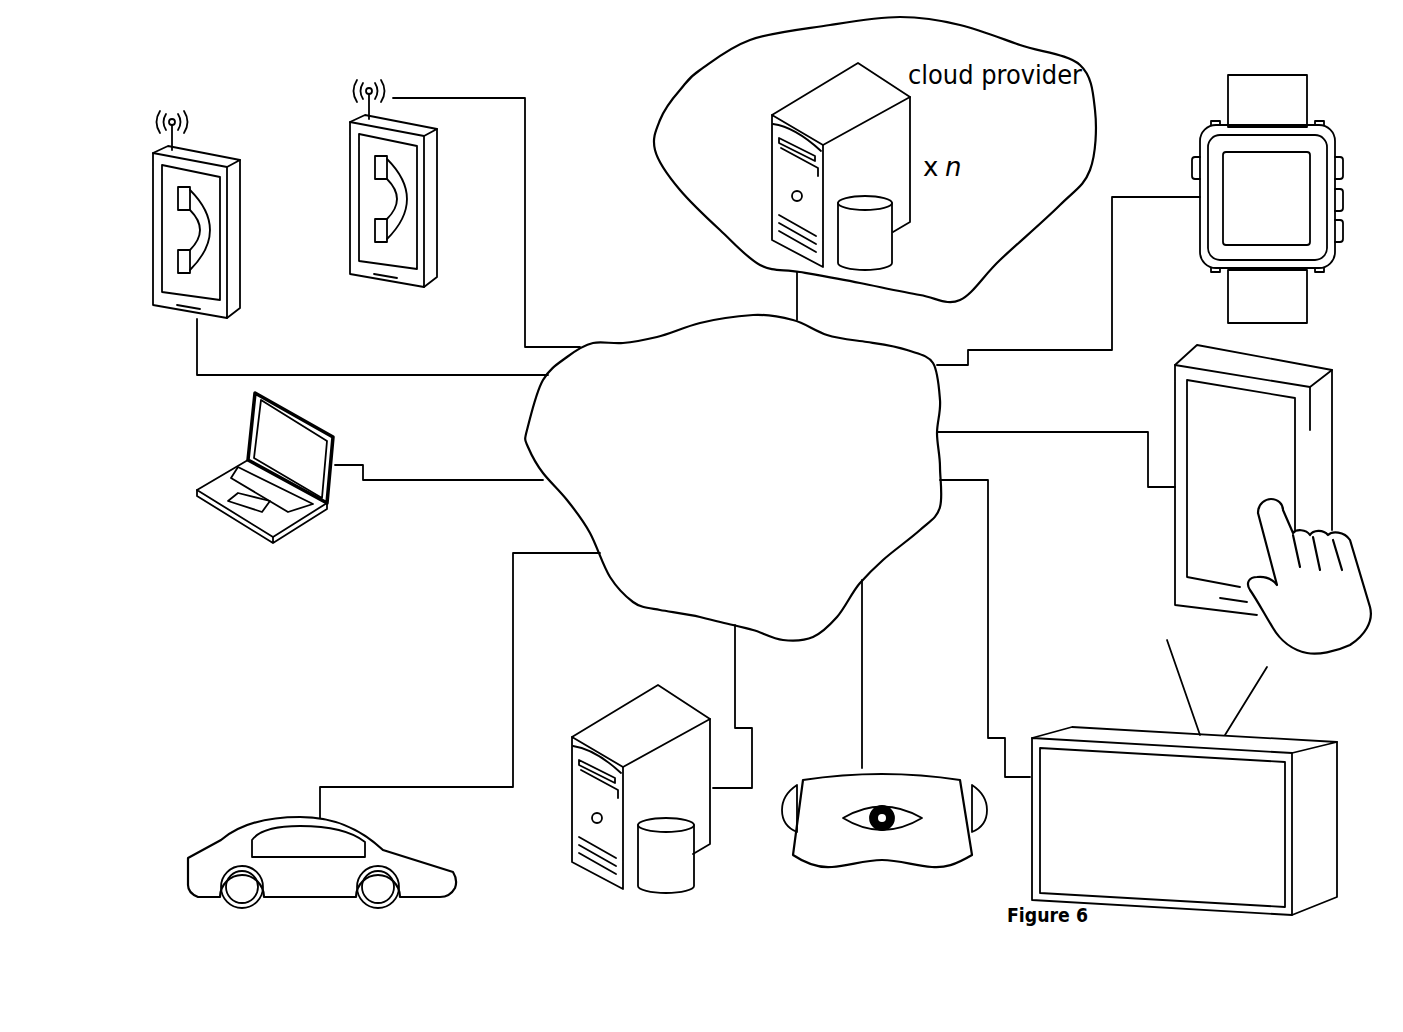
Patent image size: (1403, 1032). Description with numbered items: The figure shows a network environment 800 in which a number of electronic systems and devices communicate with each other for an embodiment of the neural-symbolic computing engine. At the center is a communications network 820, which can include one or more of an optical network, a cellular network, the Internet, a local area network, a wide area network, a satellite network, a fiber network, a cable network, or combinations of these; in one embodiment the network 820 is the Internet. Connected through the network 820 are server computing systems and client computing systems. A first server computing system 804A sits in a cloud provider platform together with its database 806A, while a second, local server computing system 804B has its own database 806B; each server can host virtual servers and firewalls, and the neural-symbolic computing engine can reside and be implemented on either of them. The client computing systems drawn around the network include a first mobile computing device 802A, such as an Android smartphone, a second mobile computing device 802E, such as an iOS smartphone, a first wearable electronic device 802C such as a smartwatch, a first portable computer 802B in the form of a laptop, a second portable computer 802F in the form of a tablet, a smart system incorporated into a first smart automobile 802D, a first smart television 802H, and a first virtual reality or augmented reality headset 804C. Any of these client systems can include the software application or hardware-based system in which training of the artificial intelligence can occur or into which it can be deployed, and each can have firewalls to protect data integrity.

The network environment 800 is at (585, 110).
The first mobile computing device 802A is at (412, 177).
The first portable computer 802B is at (296, 467).
The first wearable electronic device 802C is at (1263, 180).
The first smart automobile 802D is at (305, 827).
The second mobile computing device 802E is at (220, 199).
The second portable computer 802F is at (1216, 499).
The first smart television 802H is at (1184, 777).
The first server computing system 804A is at (823, 163).
The second server computing system 804B is at (620, 777).
The first virtual reality or augmented reality headset 804C is at (864, 833).
The database 806A is at (902, 233).
The database 806B is at (639, 870).
The communications network 820 is at (733, 478).